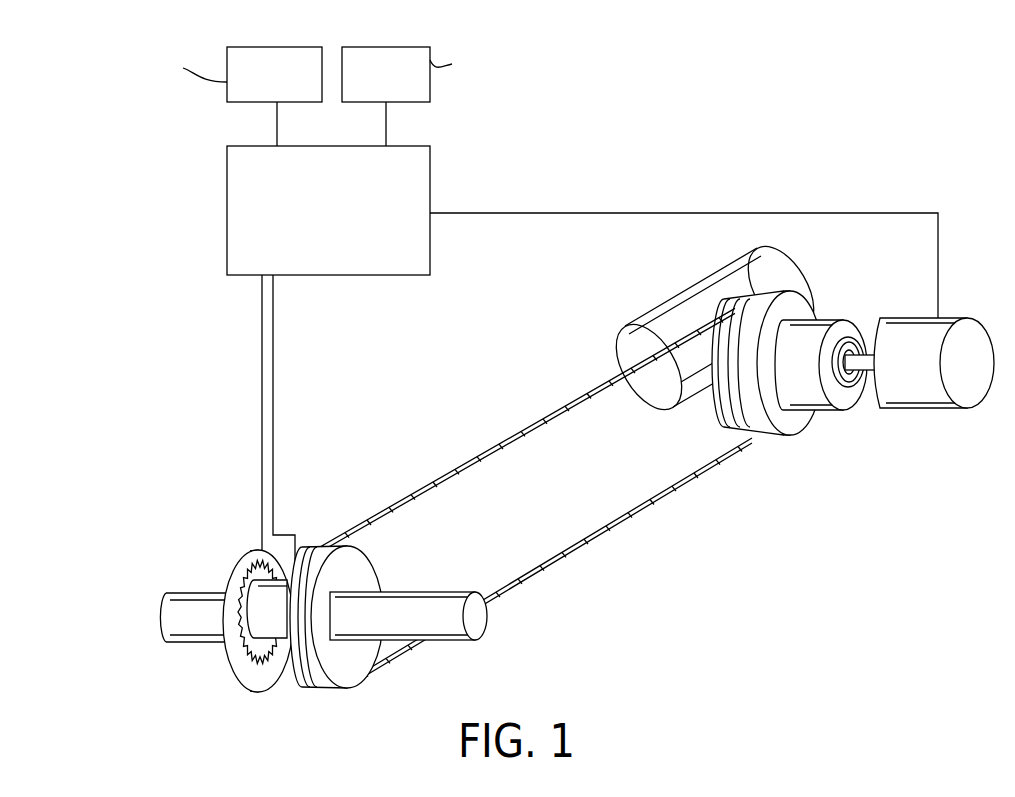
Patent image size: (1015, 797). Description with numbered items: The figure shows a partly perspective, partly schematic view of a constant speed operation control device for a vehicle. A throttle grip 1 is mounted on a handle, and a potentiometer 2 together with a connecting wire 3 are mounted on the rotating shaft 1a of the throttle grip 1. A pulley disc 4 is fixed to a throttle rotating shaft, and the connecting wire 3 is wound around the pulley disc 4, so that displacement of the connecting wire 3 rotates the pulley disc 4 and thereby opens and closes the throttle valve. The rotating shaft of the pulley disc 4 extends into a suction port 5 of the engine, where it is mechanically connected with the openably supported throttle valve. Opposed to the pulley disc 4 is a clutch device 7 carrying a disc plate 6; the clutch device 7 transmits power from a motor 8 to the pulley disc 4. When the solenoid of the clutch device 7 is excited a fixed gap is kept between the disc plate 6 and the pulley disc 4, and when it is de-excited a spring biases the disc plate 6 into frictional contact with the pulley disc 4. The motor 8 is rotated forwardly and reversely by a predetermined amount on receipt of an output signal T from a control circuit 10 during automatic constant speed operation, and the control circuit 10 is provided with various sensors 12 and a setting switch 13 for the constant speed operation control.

The throttle grip 1 is at (437, 642).
The rotating shaft 1a is at (198, 591).
The potentiometer 2 is at (235, 654).
The connecting wire 3 is at (603, 528).
The pulley disc 4 is at (726, 410).
The suction port 5 is at (681, 297).
The disc plate 6 is at (802, 426).
The clutch device 7 is at (845, 326).
The motor 8 is at (975, 393).
The control circuit 10 is at (400, 265).
The sensors 12 is at (395, 47).
The setting switch 13 is at (278, 47).